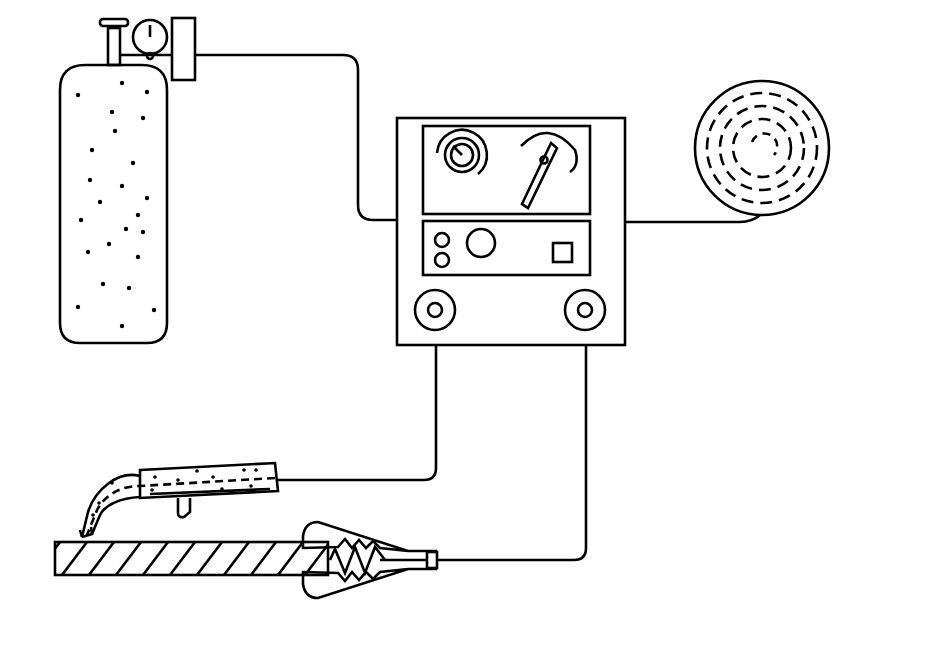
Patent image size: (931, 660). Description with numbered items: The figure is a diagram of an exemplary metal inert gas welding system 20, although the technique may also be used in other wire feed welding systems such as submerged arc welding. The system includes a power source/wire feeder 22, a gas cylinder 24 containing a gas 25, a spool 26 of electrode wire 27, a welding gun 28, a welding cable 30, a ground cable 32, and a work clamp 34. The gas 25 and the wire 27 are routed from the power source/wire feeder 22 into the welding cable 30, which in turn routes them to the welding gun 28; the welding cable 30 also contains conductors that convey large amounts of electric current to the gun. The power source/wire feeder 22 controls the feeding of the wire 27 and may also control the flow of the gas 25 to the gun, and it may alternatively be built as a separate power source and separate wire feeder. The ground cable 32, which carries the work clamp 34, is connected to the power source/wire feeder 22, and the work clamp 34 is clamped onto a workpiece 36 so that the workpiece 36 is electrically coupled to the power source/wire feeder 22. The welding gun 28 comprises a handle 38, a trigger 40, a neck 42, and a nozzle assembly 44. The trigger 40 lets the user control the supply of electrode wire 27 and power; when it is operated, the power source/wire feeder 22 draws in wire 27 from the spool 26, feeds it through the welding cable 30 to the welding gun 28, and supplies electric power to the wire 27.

The MIG welding system 20 is at (545, 30).
The power source/wire feeder 22 is at (620, 100).
The gas cylinder 24 is at (60, 140).
The gas 25 is at (125, 302).
The spool 26 is at (823, 172).
The electrode wire 27 is at (783, 115).
The welding gun 28 is at (253, 458).
The welding cable 30 is at (436, 415).
The ground cable 32 is at (587, 415).
The work clamp 34 is at (375, 540).
The workpiece 36 is at (215, 565).
The handle 38 is at (235, 495).
The trigger 40 is at (185, 514).
The neck 42 is at (93, 495).
The nozzle assembly 44 is at (70, 526).